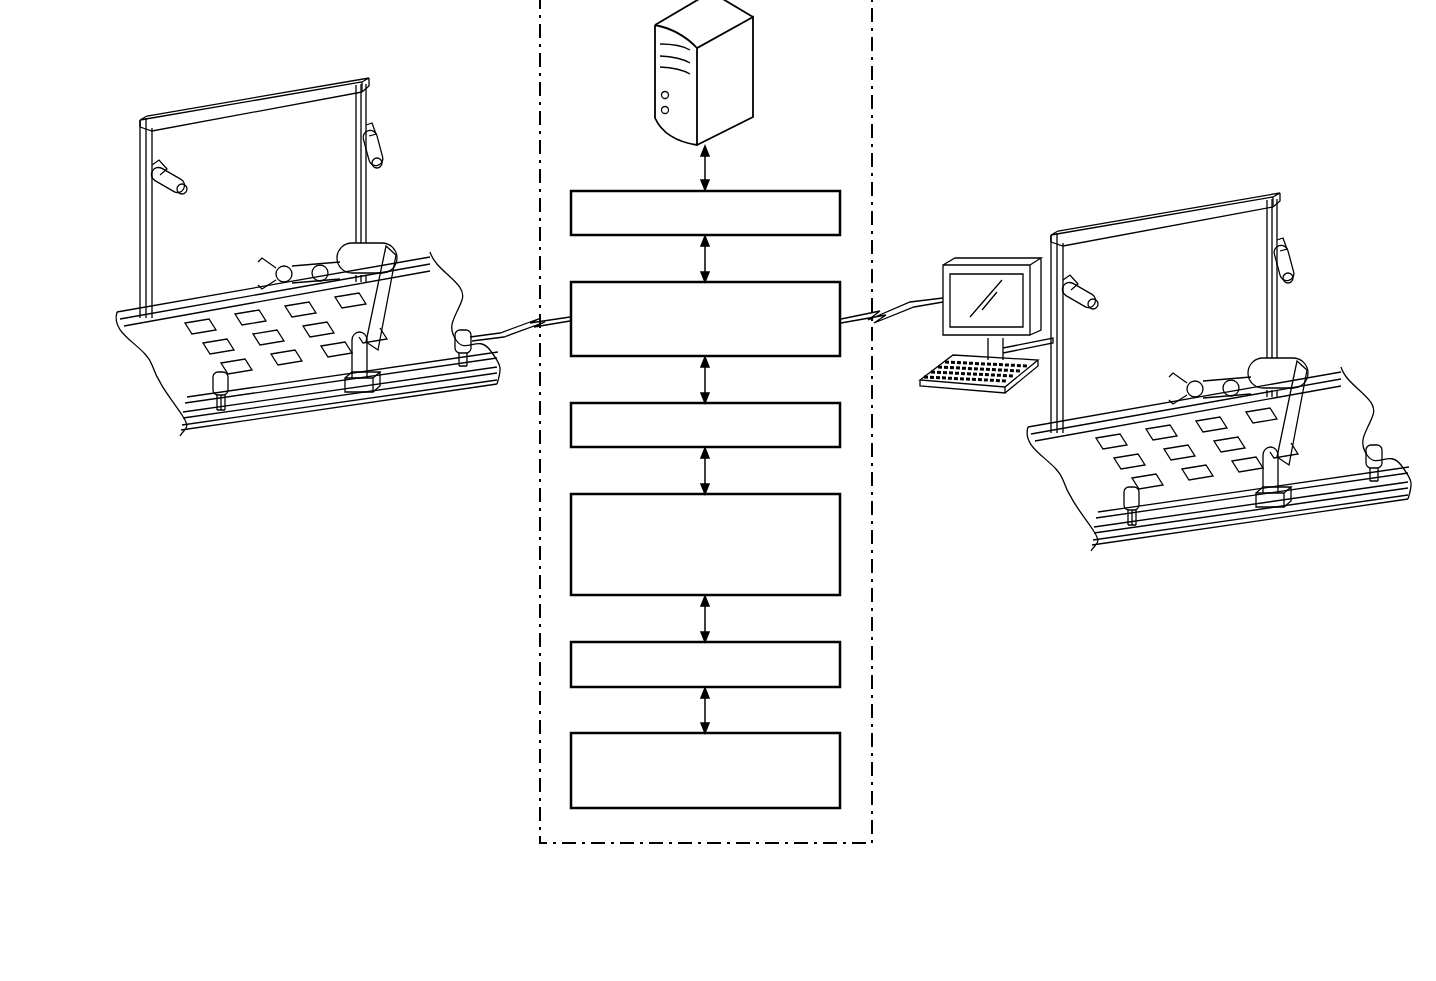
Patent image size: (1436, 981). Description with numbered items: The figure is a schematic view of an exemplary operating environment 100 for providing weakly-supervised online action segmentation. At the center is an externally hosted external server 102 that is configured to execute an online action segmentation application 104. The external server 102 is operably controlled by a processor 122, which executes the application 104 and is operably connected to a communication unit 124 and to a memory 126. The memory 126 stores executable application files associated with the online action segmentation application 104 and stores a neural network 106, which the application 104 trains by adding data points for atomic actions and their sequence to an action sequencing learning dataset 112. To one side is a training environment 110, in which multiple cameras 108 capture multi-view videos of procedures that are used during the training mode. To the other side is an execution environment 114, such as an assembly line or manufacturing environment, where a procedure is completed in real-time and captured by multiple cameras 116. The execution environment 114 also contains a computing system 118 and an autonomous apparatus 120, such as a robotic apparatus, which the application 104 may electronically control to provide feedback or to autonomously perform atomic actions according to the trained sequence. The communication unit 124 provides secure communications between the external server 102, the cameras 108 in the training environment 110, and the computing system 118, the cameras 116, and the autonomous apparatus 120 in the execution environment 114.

The operating environment 100 is at (1103, 78).
The external server 102 is at (756, 66).
The online action segmentation application 104 is at (760, 494).
The neural network 106 is at (760, 642).
The cameras 108 is at (173, 172).
The training environment 110 is at (300, 249).
The action sequencing learning dataset 112 is at (760, 733).
The execution environment 114 is at (1211, 339).
The cameras 116 is at (1088, 290).
The computing system 118 is at (992, 263).
The autonomous apparatus 120 is at (1283, 370).
The processor 122 is at (760, 191).
The communication unit 124 is at (760, 283).
The memory 126 is at (760, 403).